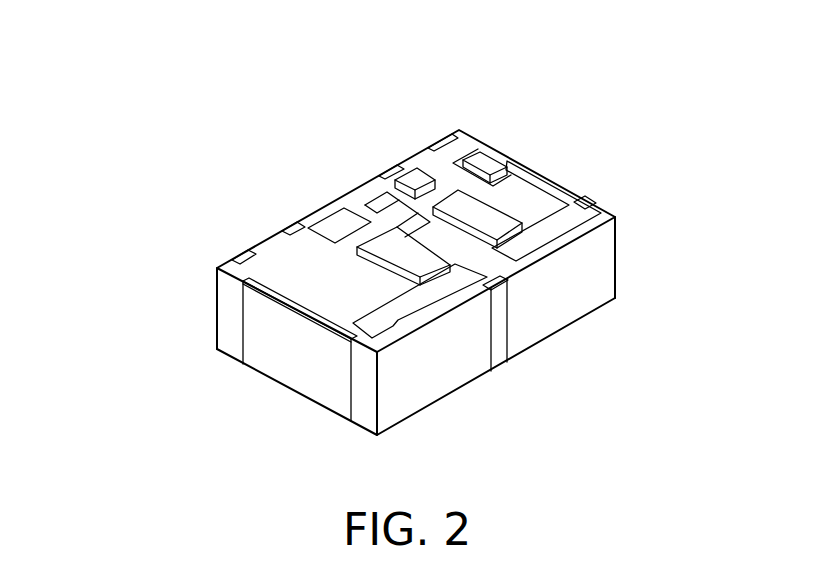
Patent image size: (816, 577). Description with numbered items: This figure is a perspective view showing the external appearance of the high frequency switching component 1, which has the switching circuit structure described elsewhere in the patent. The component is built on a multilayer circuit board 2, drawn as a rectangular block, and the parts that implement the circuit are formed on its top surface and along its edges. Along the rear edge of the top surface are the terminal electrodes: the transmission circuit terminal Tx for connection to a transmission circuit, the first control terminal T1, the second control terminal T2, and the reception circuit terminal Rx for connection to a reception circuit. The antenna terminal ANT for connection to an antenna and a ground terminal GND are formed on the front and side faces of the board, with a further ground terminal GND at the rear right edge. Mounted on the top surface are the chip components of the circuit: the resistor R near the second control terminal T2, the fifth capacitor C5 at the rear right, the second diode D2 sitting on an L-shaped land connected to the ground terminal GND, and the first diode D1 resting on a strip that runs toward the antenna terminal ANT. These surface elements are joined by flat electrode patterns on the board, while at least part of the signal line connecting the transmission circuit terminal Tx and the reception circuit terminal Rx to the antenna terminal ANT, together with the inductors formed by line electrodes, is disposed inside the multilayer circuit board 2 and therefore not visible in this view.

The high frequency switching component 1 is at (284, 88).
The multilayer circuit board 2 is at (626, 266).
The transmission circuit terminal Tx is at (242, 252).
The first control terminal T1 is at (297, 222).
The second control terminal T2 is at (388, 172).
The resistor R is at (415, 178).
The reception circuit terminal Rx is at (445, 140).
The fifth capacitor C5 is at (490, 162).
The second diode D2 is at (488, 210).
The first diode D1 is at (420, 263).
The antenna terminal ANT is at (500, 353).
The ground terminal GND is at (303, 372).